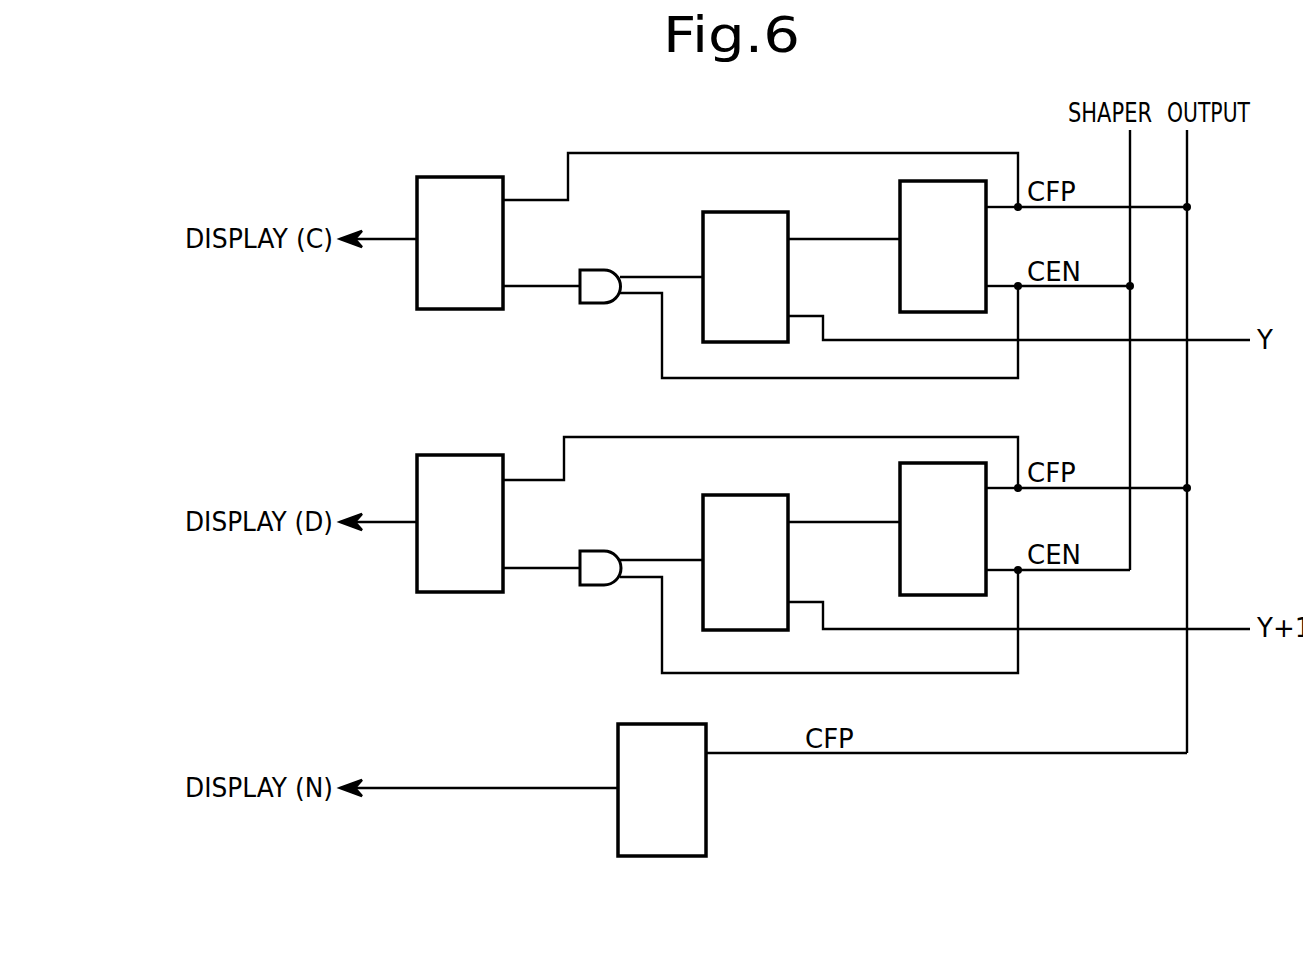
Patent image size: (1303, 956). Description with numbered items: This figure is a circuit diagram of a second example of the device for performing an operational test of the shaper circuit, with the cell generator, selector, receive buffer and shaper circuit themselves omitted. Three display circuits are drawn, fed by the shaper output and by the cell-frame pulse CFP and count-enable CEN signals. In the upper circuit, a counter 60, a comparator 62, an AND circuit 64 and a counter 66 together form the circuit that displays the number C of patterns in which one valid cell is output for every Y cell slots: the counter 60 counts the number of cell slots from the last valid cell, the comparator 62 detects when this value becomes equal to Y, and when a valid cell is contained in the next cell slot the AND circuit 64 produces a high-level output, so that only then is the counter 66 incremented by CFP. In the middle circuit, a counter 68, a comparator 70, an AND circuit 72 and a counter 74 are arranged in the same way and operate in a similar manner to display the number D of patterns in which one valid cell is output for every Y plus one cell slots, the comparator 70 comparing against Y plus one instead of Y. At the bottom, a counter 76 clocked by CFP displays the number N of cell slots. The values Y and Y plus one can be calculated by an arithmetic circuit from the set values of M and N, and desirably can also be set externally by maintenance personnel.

The counter 60 is at (900, 205).
The comparator 62 is at (736, 212).
The AND circuit 64 is at (604, 270).
The counter 66 is at (465, 177).
The counter 68 is at (900, 468).
The comparator 70 is at (742, 495).
The AND circuit 72 is at (604, 551).
The counter 74 is at (474, 455).
The counter 76 is at (706, 724).